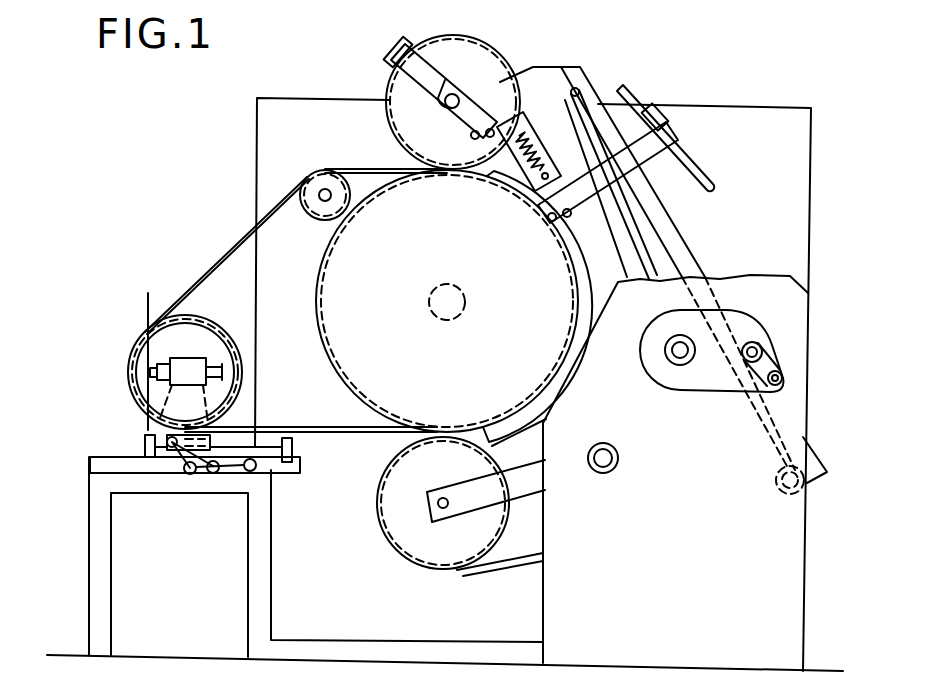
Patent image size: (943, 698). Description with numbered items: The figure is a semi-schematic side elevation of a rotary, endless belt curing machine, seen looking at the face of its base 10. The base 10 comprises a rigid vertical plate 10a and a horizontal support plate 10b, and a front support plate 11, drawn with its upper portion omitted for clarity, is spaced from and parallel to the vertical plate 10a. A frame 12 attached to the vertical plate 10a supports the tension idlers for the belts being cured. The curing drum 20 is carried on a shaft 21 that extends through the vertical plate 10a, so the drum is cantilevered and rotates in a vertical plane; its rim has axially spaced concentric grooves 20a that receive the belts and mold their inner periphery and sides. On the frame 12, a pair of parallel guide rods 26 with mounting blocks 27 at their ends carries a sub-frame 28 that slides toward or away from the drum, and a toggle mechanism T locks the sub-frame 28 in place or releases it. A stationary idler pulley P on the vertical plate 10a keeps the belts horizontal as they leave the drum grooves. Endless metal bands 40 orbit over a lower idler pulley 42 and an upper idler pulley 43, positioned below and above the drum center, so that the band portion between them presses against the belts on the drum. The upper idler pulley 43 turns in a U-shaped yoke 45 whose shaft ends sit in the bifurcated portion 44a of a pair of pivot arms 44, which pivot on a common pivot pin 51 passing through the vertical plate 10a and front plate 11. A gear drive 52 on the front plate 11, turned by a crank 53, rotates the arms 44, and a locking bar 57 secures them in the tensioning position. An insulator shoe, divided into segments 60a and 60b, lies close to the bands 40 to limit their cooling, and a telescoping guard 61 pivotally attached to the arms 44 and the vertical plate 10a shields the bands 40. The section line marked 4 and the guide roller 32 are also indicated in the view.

The base 10 is at (200, 135).
The vertical plate 10a is at (780, 120).
The horizontal support plate 10b is at (440, 653).
The front support plate 11 is at (683, 584).
The frame 12 is at (290, 519).
The curing drum 20 is at (400, 309).
The concentric grooves 20a is at (355, 387).
The shaft 21 is at (440, 318).
The guide rods 26 is at (300, 476).
The mounting blocks 27 is at (316, 448).
The sub-frame 28 is at (170, 452).
The guide roller 32 is at (130, 362).
The section line 4- 4 is at (173, 412).
The endless bands 40 is at (520, 565).
The lower idler pulley 42 is at (400, 535).
The upper idler pulley 43 is at (402, 85).
The pivot arms 44 is at (597, 257).
The bifurcated portion 44a is at (440, 85).
The yoke 45 is at (400, 47).
The pivot pin 51 is at (680, 352).
The gear drive 52 is at (717, 380).
The crank 53 is at (770, 384).
The locking bar 57 is at (682, 152).
The insulator shoe segment 60a is at (527, 417).
The insulator shoe segment 60b is at (582, 325).
The telescoping guard 61 is at (680, 248).
The stationary idler pulley P is at (325, 180).
The toggle mechanism T is at (215, 470).